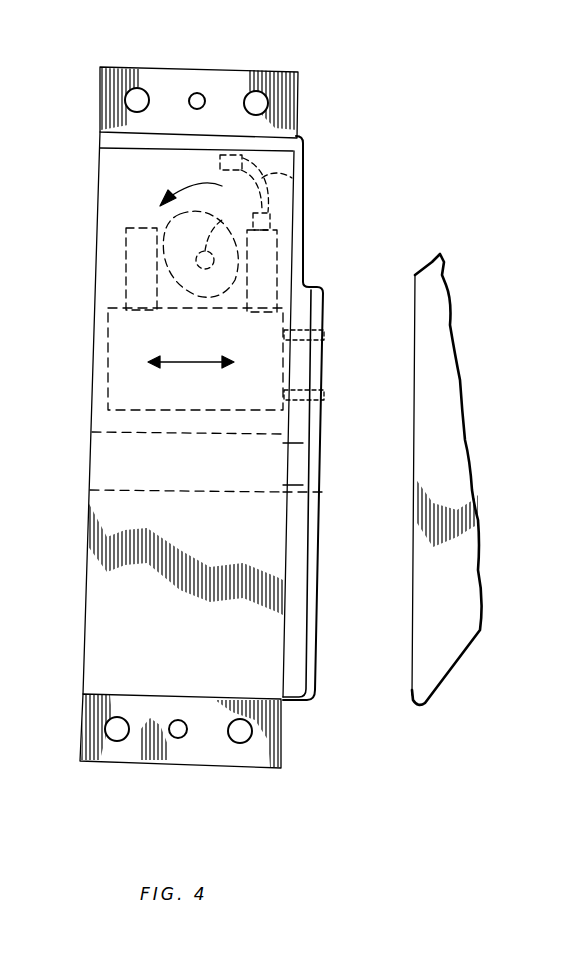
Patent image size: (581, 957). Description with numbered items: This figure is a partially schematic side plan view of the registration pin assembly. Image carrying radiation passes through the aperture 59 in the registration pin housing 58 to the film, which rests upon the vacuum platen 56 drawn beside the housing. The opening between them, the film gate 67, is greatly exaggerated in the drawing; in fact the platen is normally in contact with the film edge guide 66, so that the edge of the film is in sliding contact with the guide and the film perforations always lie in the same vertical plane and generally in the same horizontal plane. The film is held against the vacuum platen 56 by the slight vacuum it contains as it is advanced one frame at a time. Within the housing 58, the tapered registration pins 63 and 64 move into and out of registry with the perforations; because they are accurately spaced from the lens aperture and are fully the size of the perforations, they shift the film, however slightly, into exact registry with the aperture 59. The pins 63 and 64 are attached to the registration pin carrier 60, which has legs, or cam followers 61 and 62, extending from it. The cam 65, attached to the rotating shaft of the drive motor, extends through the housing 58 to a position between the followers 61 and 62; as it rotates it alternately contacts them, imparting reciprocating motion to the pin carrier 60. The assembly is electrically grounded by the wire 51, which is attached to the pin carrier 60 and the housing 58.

The registration pin housing 58 is at (342, 92).
The wire 51 is at (292, 180).
The cam 65 is at (222, 228).
The cam follower 62 is at (266, 258).
The cam follower 61 is at (137, 270).
The registration pin carrier 60 is at (125, 386).
The registration pin 63 is at (324, 332).
The registration pin 64 is at (324, 396).
The aperture 59 is at (103, 476).
The film edge guide 66 is at (318, 484).
The film gate 67 is at (357, 676).
The vacuum platen 56 is at (455, 570).